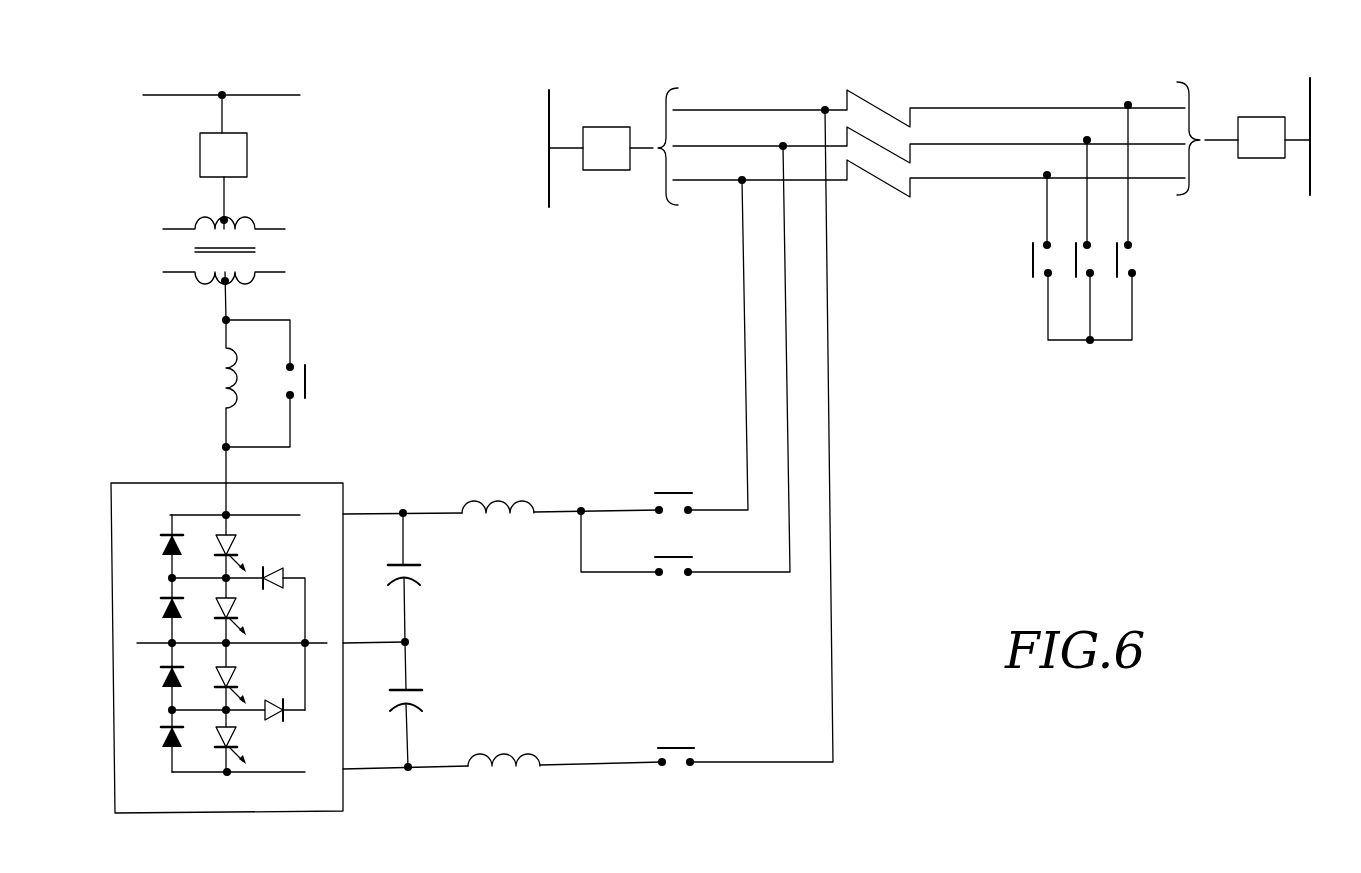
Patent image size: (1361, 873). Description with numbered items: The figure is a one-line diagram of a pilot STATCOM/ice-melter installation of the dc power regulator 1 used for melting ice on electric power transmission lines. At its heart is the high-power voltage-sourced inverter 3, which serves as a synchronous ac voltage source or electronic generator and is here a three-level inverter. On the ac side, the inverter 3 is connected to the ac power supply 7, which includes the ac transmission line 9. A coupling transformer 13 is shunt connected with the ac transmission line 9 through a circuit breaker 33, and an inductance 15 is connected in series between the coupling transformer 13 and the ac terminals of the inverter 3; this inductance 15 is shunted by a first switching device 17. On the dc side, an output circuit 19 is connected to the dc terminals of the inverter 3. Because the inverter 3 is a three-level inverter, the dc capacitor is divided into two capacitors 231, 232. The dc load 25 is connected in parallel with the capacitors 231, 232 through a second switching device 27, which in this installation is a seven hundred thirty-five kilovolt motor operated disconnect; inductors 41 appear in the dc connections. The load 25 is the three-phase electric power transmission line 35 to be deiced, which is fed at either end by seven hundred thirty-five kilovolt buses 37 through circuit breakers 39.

The dc power regulator 1 is at (386, 304).
The voltage-sourced inverter 3 is at (312, 483).
The ac power supply 7 is at (254, 77).
The ac transmission line 9 is at (197, 95).
The coupling transformer 13 is at (262, 222).
The inductance 15 is at (215, 358).
The first switching device 17 is at (308, 380).
The output circuit 19 is at (552, 425).
The capacitor 231 is at (417, 563).
The capacitor 232 is at (417, 688).
The dc load 25 is at (855, 508).
The second switching device 27 is at (684, 790).
The circuit breaker 33 is at (200, 147).
The three-phase electric power transmission line 35 is at (1000, 88).
The buses 37 is at (545, 108).
The circuit breakers 39 is at (601, 127).
The inductor 41 is at (508, 497).